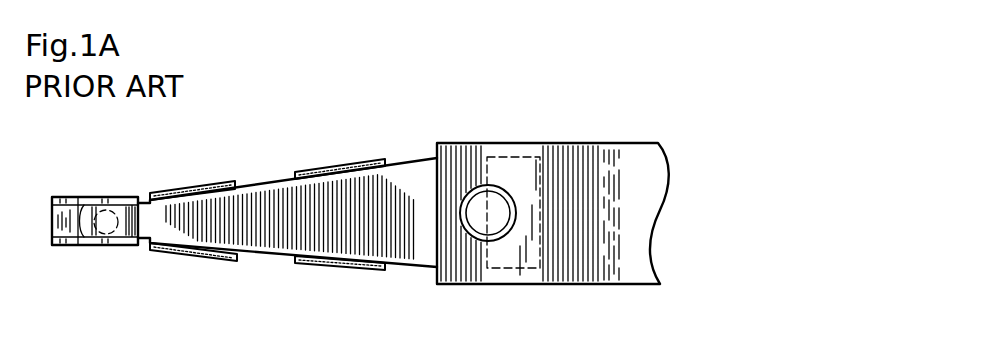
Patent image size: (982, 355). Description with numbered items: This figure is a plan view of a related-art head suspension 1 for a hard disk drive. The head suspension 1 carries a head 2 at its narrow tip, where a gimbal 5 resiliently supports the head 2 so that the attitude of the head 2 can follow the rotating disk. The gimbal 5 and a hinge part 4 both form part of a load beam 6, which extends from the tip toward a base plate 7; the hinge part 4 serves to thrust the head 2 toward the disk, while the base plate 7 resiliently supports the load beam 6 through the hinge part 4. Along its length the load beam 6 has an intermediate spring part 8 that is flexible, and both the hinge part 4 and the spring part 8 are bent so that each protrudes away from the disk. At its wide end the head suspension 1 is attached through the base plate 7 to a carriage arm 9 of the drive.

The head suspension 1 is at (397, 103).
The head 2 is at (125, 233).
The hinge part 4 is at (413, 157).
The gimbal 5 is at (60, 222).
The load beam 6 is at (297, 172).
The base plate 7 is at (509, 170).
The spring part 8 is at (267, 180).
The carriage arm 9 is at (619, 157).